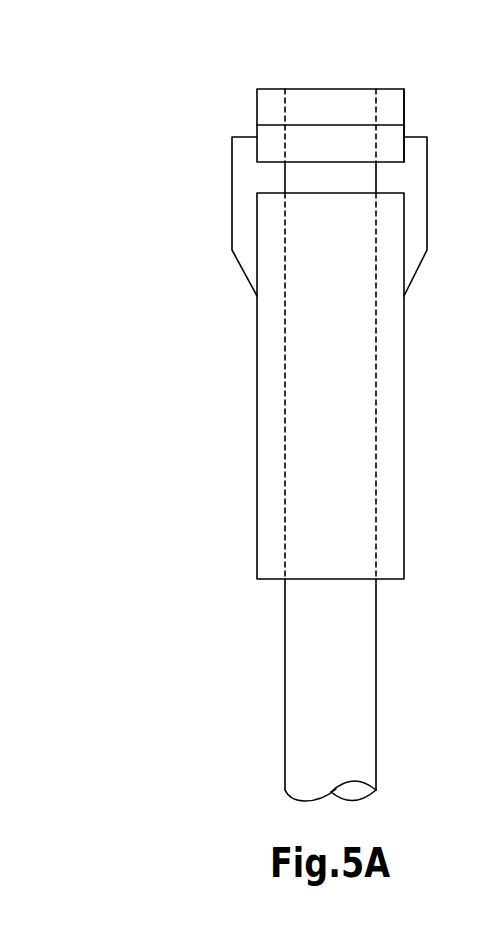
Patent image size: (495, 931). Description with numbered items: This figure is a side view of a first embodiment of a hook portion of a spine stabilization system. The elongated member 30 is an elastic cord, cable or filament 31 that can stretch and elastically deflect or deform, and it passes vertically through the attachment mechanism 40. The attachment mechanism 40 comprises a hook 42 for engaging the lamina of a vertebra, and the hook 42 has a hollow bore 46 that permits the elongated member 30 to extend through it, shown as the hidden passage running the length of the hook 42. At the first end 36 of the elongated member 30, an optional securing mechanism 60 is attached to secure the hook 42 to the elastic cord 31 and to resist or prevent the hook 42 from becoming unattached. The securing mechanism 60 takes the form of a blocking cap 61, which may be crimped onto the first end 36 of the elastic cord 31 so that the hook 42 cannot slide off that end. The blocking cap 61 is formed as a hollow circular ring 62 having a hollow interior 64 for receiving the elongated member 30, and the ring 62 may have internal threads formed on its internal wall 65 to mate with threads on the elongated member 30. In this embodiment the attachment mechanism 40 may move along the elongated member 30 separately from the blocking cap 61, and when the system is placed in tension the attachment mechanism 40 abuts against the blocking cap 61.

The elongated member 30 is at (317, 670).
The elastic cord, cable or filament 31 is at (310, 750).
The first end of the elongated member 36 is at (313, 182).
The attachment mechanism 40 is at (388, 487).
The hook 42 is at (282, 337).
The hollow bore 46 is at (318, 427).
The securing mechanism 60 is at (268, 88).
The blocking cap 61 is at (392, 105).
The hollow circular ring 62 is at (332, 88).
The hollow interior 64 is at (348, 107).
The internal wall 65 is at (286, 108).